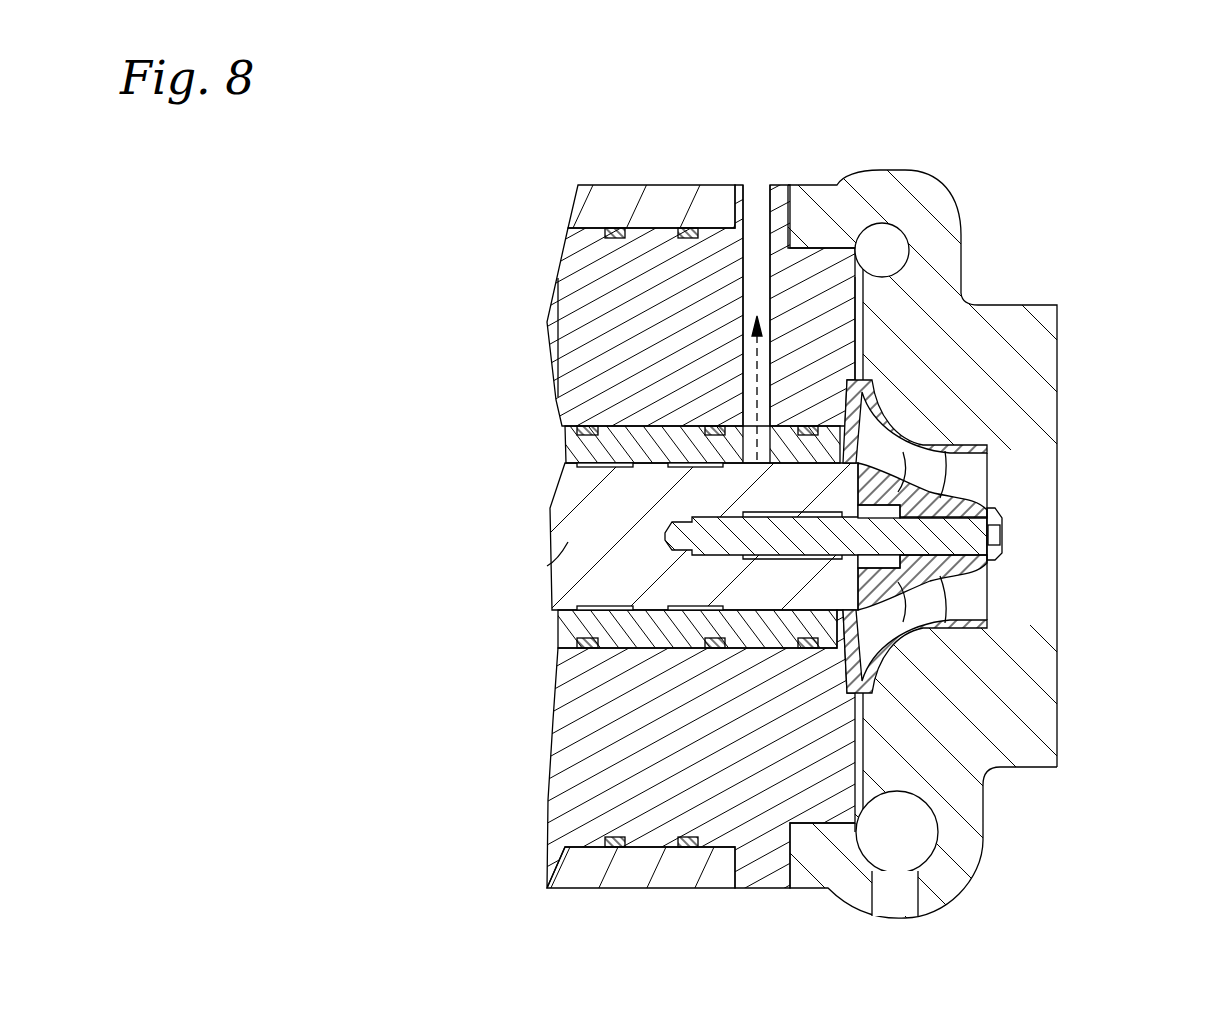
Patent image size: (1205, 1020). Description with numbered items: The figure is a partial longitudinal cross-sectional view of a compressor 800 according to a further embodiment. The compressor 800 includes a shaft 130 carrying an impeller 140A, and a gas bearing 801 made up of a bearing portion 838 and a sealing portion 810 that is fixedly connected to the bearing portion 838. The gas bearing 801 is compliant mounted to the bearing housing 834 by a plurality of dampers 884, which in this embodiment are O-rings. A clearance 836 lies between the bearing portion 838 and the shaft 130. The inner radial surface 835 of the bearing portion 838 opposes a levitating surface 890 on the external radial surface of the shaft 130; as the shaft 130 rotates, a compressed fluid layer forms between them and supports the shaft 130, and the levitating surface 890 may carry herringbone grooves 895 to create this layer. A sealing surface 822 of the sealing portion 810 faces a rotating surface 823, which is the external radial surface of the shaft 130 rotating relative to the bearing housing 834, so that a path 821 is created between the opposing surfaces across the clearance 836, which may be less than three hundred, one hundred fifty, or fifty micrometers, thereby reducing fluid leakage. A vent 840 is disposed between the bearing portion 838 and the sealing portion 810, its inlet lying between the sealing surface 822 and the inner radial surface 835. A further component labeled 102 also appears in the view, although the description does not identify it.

The compressor 800 is at (1085, 138).
The gas bearing 801 is at (650, 425).
The bearing portion 838 is at (619, 410).
The end plate 102 is at (686, 185).
The vent 840 is at (760, 203).
The sealing portion 810 is at (838, 362).
The path 821 is at (873, 403).
The clearance 836 is at (880, 450).
The sealing surface 822 is at (950, 448).
The impeller 140A is at (953, 503).
The rotating surface 823 is at (885, 588).
The herringbone grooves 895 is at (566, 443).
The inner radial surface 835 is at (655, 475).
The shaft 130 is at (547, 566).
The levitating surface 890 is at (553, 613).
The dampers 884 is at (803, 650).
The bearing housing 834 is at (820, 790).